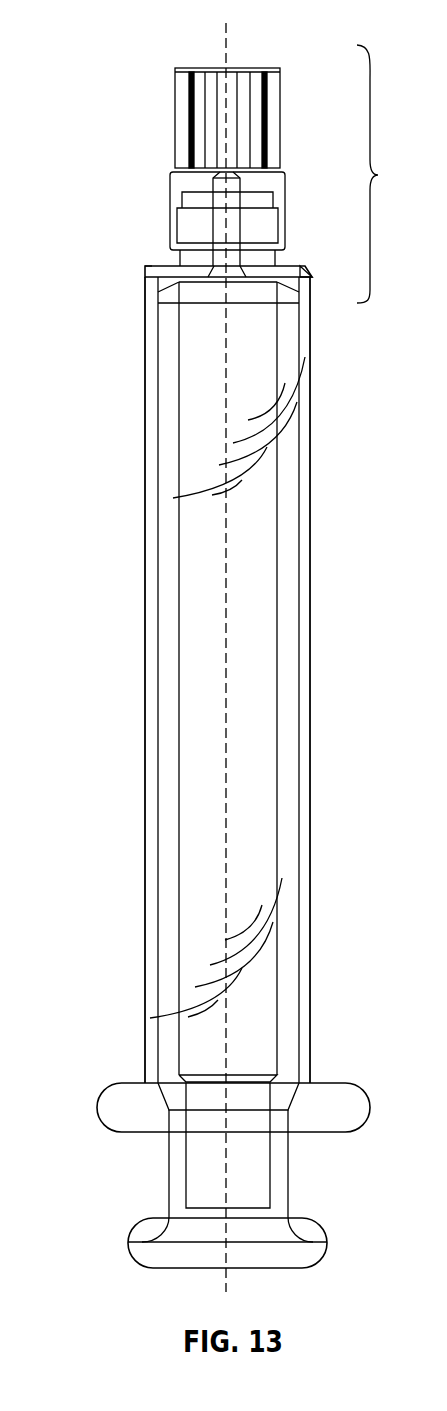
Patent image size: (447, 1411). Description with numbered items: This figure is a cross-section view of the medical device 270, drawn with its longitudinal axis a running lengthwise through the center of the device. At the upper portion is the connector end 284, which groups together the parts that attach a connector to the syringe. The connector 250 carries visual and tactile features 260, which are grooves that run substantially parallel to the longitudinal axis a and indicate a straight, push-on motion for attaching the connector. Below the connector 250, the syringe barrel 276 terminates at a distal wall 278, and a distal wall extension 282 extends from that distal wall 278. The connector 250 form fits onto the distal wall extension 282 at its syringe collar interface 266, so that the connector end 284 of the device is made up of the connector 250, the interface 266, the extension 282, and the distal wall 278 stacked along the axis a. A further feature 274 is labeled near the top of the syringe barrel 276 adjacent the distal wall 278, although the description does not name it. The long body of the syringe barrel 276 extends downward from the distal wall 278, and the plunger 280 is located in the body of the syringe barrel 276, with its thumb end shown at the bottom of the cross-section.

The medical device 270 is at (131, 37).
The longitudinal axis a is at (223, 45).
The visual and tactile features 260 is at (198, 110).
The connector 250 is at (174, 140).
The syringe collar interface 266 is at (177, 223).
The distal wall extension 282 is at (180, 258).
The barrel shoulder 274 is at (148, 268).
The distal wall 278 is at (288, 267).
The connector end 284 is at (394, 174).
The syringe barrel 276 is at (144, 672).
The plunger 280 is at (294, 1234).